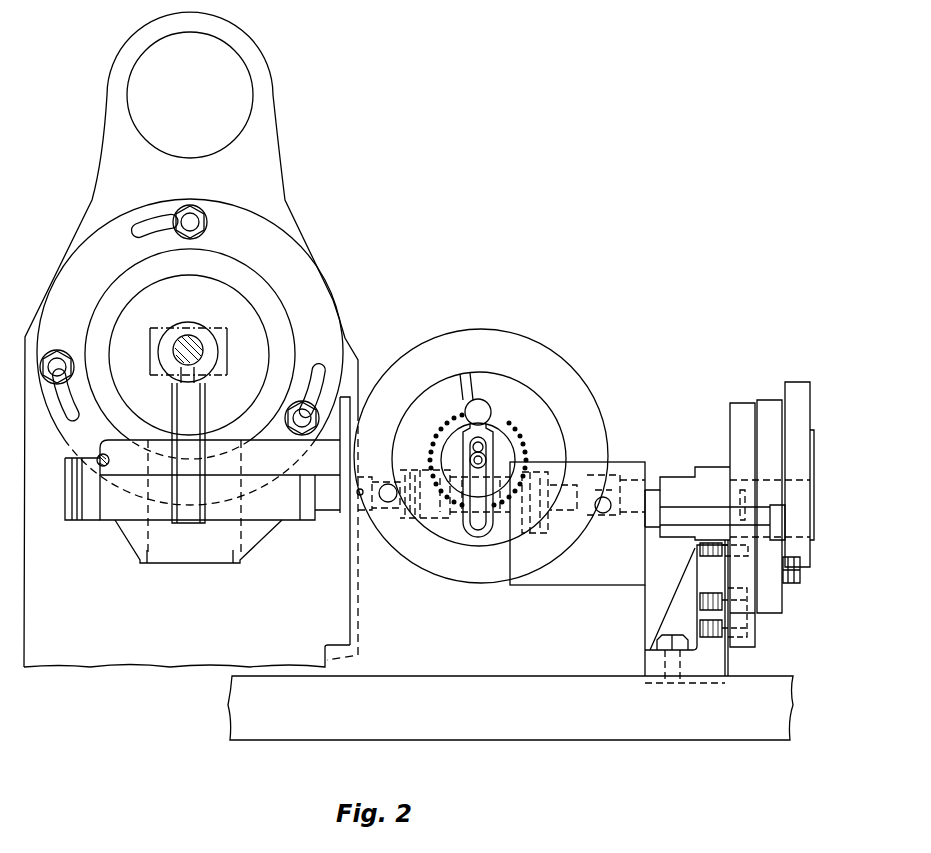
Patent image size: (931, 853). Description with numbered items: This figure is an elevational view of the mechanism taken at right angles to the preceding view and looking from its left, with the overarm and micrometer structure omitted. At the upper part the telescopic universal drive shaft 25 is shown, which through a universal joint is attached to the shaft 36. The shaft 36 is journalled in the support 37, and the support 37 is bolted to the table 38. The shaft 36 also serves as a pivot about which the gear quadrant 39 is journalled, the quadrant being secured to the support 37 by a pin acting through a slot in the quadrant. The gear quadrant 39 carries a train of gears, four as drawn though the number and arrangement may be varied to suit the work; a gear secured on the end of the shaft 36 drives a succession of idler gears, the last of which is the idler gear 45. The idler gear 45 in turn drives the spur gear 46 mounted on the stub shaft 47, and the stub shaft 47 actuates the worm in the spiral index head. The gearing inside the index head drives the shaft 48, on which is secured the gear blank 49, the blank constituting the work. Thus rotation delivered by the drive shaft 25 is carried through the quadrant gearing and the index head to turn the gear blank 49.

The telescopic universal drive shaft 25 is at (433, 527).
The shaft 36 is at (663, 490).
The support 37 is at (715, 663).
The table 38 is at (510, 708).
The gear quadrant 39 is at (773, 402).
The idler gear 45 is at (793, 394).
The spur gear 46 is at (802, 555).
The stub shaft 47 is at (660, 535).
The shaft 48 is at (223, 463).
The gear blank 49 is at (190, 513).